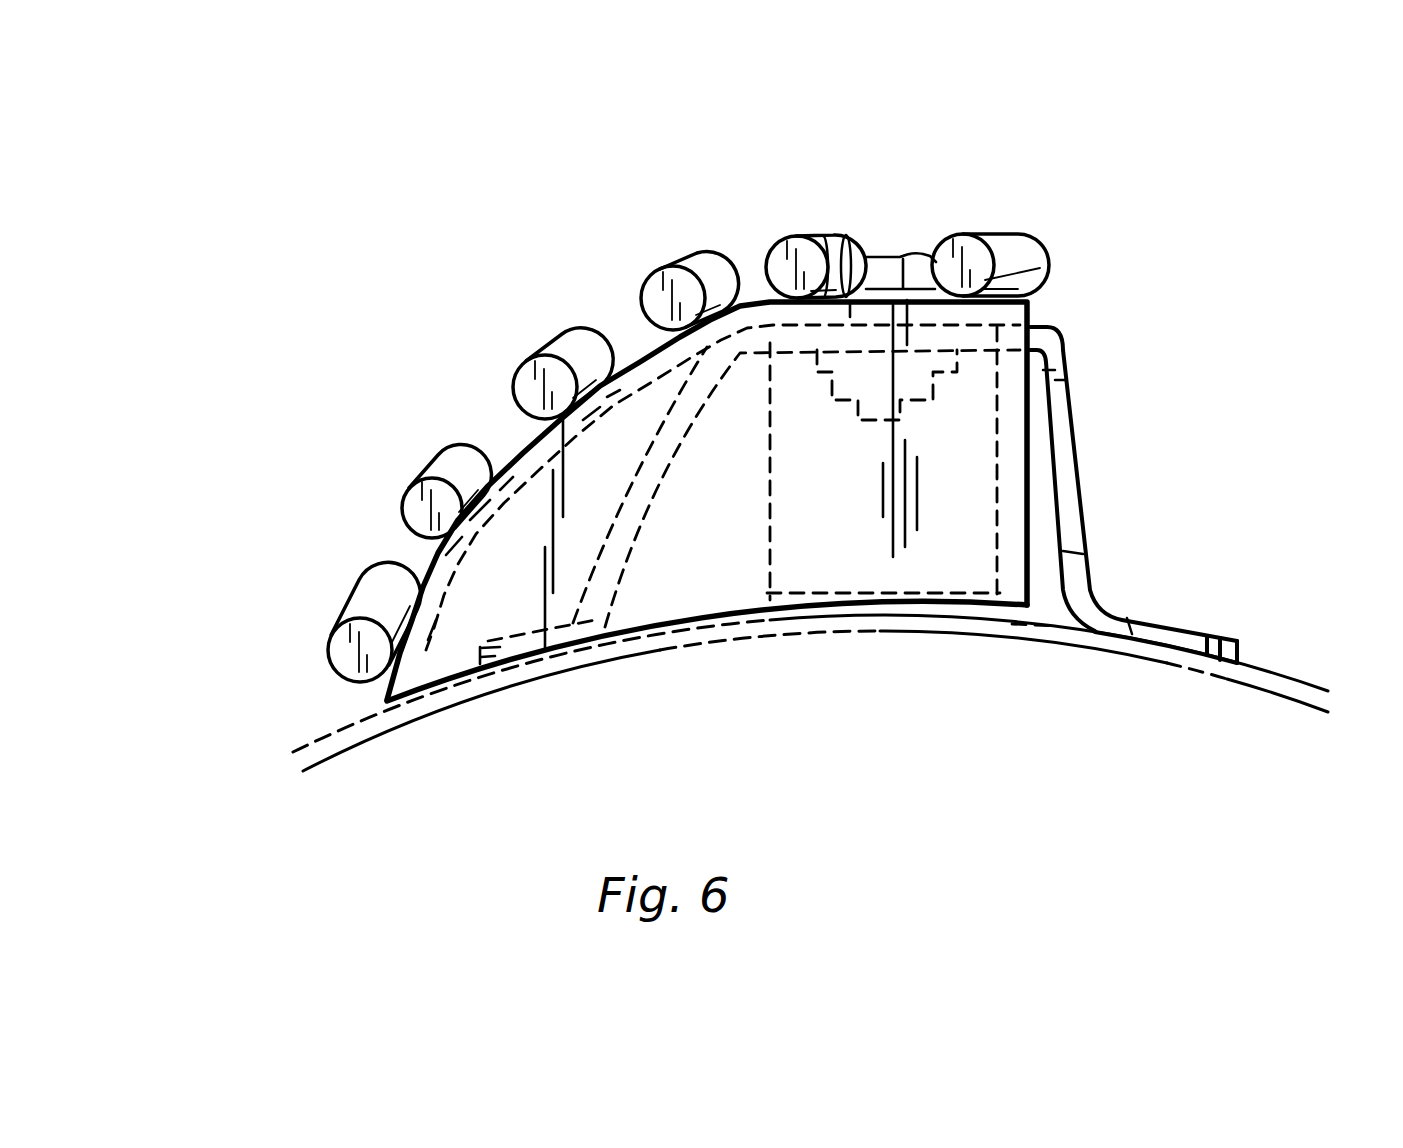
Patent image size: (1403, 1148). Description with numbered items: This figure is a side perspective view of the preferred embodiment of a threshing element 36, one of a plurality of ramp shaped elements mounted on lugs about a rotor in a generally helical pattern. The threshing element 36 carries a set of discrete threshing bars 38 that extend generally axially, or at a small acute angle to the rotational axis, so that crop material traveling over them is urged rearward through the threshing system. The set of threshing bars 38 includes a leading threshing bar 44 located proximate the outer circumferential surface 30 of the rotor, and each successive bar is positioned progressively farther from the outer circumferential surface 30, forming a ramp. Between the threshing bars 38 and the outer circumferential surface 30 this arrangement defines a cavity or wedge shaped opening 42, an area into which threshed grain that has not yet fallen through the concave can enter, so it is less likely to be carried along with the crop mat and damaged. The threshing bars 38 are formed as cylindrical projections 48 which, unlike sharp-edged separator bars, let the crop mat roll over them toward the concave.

The outer circumferential surface 30 is at (1283, 673).
The threshing element 36 is at (1083, 210).
The threshing bars 38 is at (997, 230).
The cavity or wedge shaped opening 42 is at (826, 530).
The leading threshing bar 44 is at (323, 640).
The cylindrical projections 48 is at (1050, 258).